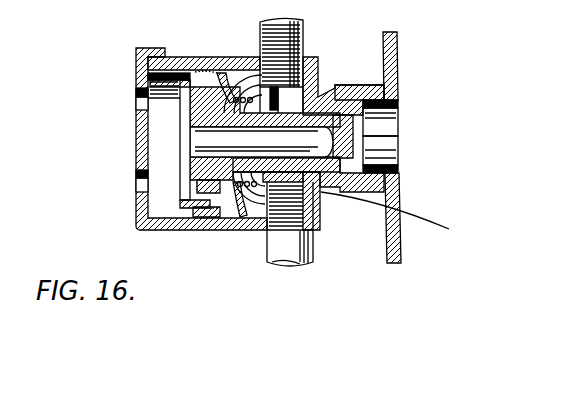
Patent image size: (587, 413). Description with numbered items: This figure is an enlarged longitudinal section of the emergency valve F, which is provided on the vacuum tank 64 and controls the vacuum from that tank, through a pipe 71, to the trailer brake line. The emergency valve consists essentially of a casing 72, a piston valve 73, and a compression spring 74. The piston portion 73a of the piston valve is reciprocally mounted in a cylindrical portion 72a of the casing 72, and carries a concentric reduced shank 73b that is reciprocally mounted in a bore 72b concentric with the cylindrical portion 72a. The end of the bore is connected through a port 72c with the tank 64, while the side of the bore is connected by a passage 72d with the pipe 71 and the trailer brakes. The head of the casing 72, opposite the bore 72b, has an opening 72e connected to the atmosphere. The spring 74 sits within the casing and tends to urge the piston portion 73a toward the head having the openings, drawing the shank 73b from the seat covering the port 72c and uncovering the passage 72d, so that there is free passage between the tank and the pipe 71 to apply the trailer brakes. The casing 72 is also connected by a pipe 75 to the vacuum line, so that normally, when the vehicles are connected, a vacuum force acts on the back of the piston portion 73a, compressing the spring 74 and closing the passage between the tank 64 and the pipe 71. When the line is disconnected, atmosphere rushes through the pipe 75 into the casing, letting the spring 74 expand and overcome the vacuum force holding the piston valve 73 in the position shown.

The vacuum tank 64 is at (398, 52).
The pipe 71 is at (290, 21).
The casing 72 is at (160, 49).
The cylindrical portion 72a is at (172, 62).
The bore 72b is at (399, 101).
The port 72c is at (366, 128).
The passage 72d is at (311, 84).
The opening 72e is at (136, 97).
The piston valve 73 is at (193, 119).
The piston portion 73a is at (212, 70).
The reduced shank 73b is at (188, 144).
The compression spring 74 is at (235, 210).
The pipe 75 is at (298, 262).
The emergency valve F is at (393, 218).